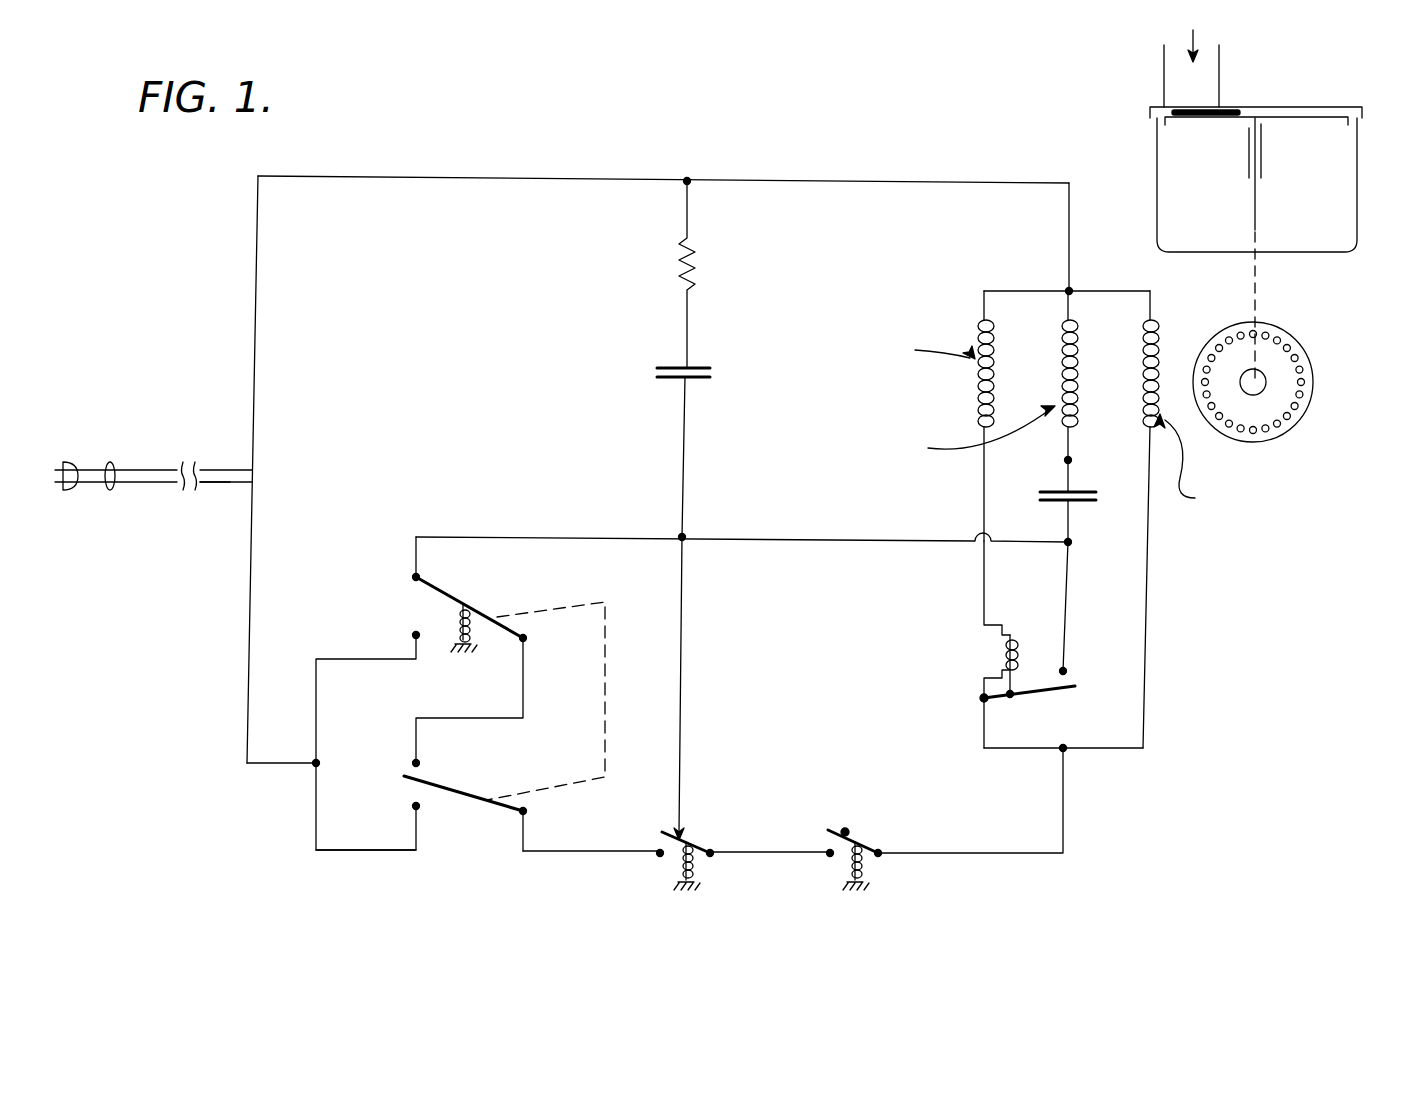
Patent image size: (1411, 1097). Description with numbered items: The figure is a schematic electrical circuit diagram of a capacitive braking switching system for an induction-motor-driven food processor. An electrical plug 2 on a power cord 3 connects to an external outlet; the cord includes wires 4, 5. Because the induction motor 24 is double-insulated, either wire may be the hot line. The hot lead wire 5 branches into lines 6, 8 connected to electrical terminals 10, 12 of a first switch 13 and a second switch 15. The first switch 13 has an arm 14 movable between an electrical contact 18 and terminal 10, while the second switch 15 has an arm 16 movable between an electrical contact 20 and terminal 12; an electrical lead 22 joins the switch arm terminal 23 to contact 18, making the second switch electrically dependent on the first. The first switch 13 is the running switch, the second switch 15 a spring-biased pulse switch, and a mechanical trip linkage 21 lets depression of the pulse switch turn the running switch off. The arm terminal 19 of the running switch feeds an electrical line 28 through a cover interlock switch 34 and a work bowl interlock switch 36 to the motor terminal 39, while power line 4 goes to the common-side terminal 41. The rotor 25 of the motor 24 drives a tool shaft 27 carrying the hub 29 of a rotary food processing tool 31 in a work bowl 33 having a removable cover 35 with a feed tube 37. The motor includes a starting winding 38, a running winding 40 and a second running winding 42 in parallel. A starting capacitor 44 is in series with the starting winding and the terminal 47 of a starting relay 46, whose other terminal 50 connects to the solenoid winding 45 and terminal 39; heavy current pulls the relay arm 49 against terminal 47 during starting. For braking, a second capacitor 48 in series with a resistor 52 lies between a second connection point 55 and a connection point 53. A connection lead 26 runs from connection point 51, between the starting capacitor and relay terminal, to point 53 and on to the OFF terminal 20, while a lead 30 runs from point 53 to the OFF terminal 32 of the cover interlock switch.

The electrical plug 2 is at (78, 463).
The power cord 3 is at (112, 464).
The wire 4 is at (227, 470).
The wire 5 is at (222, 482).
The line 6 is at (340, 851).
The line 8 is at (340, 659).
The electrical terminal 10 is at (408, 808).
The electrical terminal 12 is at (420, 637).
The first switch 13 is at (453, 818).
The arm 14 is at (454, 790).
The second switch 15 is at (458, 578).
The arm 16 is at (473, 602).
The electrical contact 18 is at (423, 762).
The arm terminal 19 is at (527, 811).
The electrical contact 20 is at (405, 564).
The mechanical trip linkage 21 is at (607, 685).
The electrical lead 22 is at (525, 703).
The switch arm terminal 23 is at (527, 638).
The induction motor 24 is at (982, 272).
The rotor 25 is at (1300, 342).
The connection lead 26 is at (573, 536).
The tool shaft 27 is at (1258, 213).
The electrical line 28 is at (587, 854).
The hub 29 is at (1264, 150).
The lead 30 is at (686, 753).
The rotary food processing tool 31 is at (1172, 110).
The OFF terminal 32 is at (683, 825).
The work bowl 33 is at (1157, 152).
The cover interlock switch 34 is at (668, 864).
The removable cover 35 is at (1270, 107).
The work bowl interlock switch 36 is at (873, 872).
The feed tube 37 is at (1162, 52).
The starting winding 38 is at (1080, 372).
The motor terminal 39 is at (1066, 750).
The running winding 40 is at (994, 363).
The terminal 41 is at (1066, 289).
The second running winding 42 is at (1140, 350).
The starting capacitor 44 is at (1098, 500).
The solenoid winding 45 is at (1014, 650).
The starting relay 46 is at (992, 654).
The terminal 47 is at (1066, 668).
The second capacitor 48 is at (710, 372).
The relay arm 49 is at (1043, 697).
The terminal 50 is at (975, 702).
The connection point 51 is at (1072, 542).
The resistor 52 is at (695, 266).
The connection point 53 is at (684, 536).
The second connection point 55 is at (688, 179).